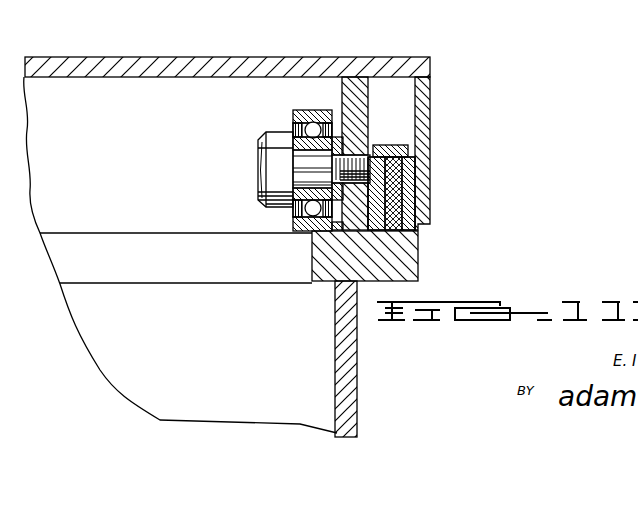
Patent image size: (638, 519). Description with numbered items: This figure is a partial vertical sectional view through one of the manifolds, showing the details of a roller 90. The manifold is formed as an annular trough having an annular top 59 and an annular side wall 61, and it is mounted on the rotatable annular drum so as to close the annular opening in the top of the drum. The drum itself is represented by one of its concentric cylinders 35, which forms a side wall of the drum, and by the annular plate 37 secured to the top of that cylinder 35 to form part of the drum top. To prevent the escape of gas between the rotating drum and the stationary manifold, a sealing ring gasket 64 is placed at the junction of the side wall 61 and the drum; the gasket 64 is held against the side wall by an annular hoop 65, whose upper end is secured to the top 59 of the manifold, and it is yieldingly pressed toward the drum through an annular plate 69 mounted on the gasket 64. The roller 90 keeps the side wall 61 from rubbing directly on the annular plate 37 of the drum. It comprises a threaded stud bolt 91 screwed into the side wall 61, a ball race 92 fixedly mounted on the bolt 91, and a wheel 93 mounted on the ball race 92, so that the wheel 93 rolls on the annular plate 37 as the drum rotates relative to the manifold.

The annular top 59 is at (209, 57).
The annular side wall 61 is at (371, 93).
The annular hoop 65 is at (429, 131).
The annular plate 69 is at (394, 145).
The sealing ring gasket 64 is at (408, 192).
The roller 90 is at (286, 127).
The threaded stud bolt 91 is at (337, 137).
The ball race 92 is at (292, 204).
The wheel 93 is at (260, 138).
The annular plate 37 is at (418, 278).
The cylinder 35 is at (358, 369).